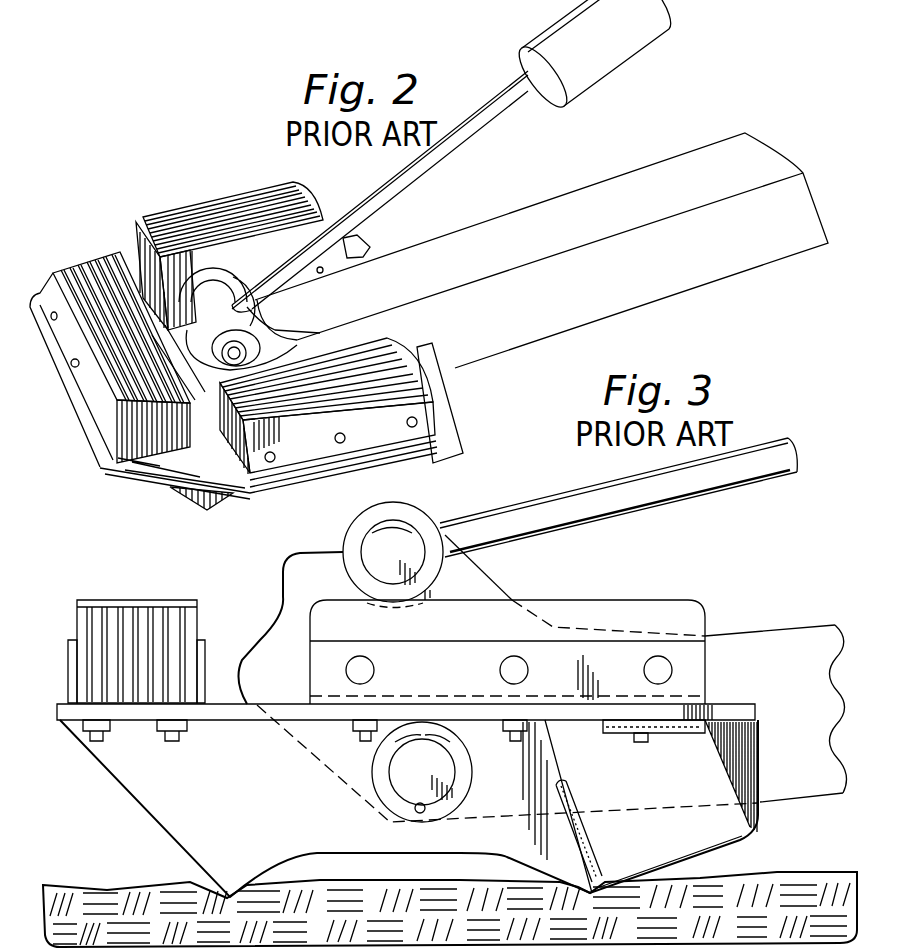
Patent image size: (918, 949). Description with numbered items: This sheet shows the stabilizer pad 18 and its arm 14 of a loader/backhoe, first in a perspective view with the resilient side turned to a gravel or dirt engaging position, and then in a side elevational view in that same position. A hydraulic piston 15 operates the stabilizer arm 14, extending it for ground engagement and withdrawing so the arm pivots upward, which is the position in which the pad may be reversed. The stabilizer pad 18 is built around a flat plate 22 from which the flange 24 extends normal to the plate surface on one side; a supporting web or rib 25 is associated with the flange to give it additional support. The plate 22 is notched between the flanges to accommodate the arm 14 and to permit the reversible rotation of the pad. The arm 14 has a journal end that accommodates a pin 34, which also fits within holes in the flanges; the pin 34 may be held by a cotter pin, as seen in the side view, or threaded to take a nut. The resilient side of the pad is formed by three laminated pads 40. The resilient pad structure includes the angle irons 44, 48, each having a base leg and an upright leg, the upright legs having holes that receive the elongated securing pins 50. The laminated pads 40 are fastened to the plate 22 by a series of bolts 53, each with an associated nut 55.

In FIG. 2, the stabilizer arm 14 is at (670, 281).
In FIG. 2, the hydraulic piston 15 is at (615, 50).
In FIG. 2, the stabilizer pad 18 is at (84, 476).
In FIG. 3, the stabilizer pad 18 is at (116, 798).
In FIG. 2, the flat plate 22 is at (133, 481).
In FIG. 3, the flat plate 22 is at (143, 710).
In FIG. 2, the flange 24 is at (207, 510).
In FIG. 3, the flange 24 is at (278, 813).
In FIG. 3, the supporting web or rib 25 is at (648, 796).
In FIG. 3, the pin 34 is at (407, 780).
In FIG. 2, the laminated pad 40 is at (220, 190).
In FIG. 3, the laminated pad 40 is at (66, 592).
In FIG. 3, the angle iron 44 is at (67, 655).
In FIG. 3, the angle iron 48 is at (206, 654).
In FIG. 2, the elongated securing pin 50 is at (72, 367).
In FIG. 3, the elongated securing pin 50 is at (649, 659).
In FIG. 3, the bolt 53 is at (182, 737).
In FIG. 3, the nut 55 is at (83, 727).